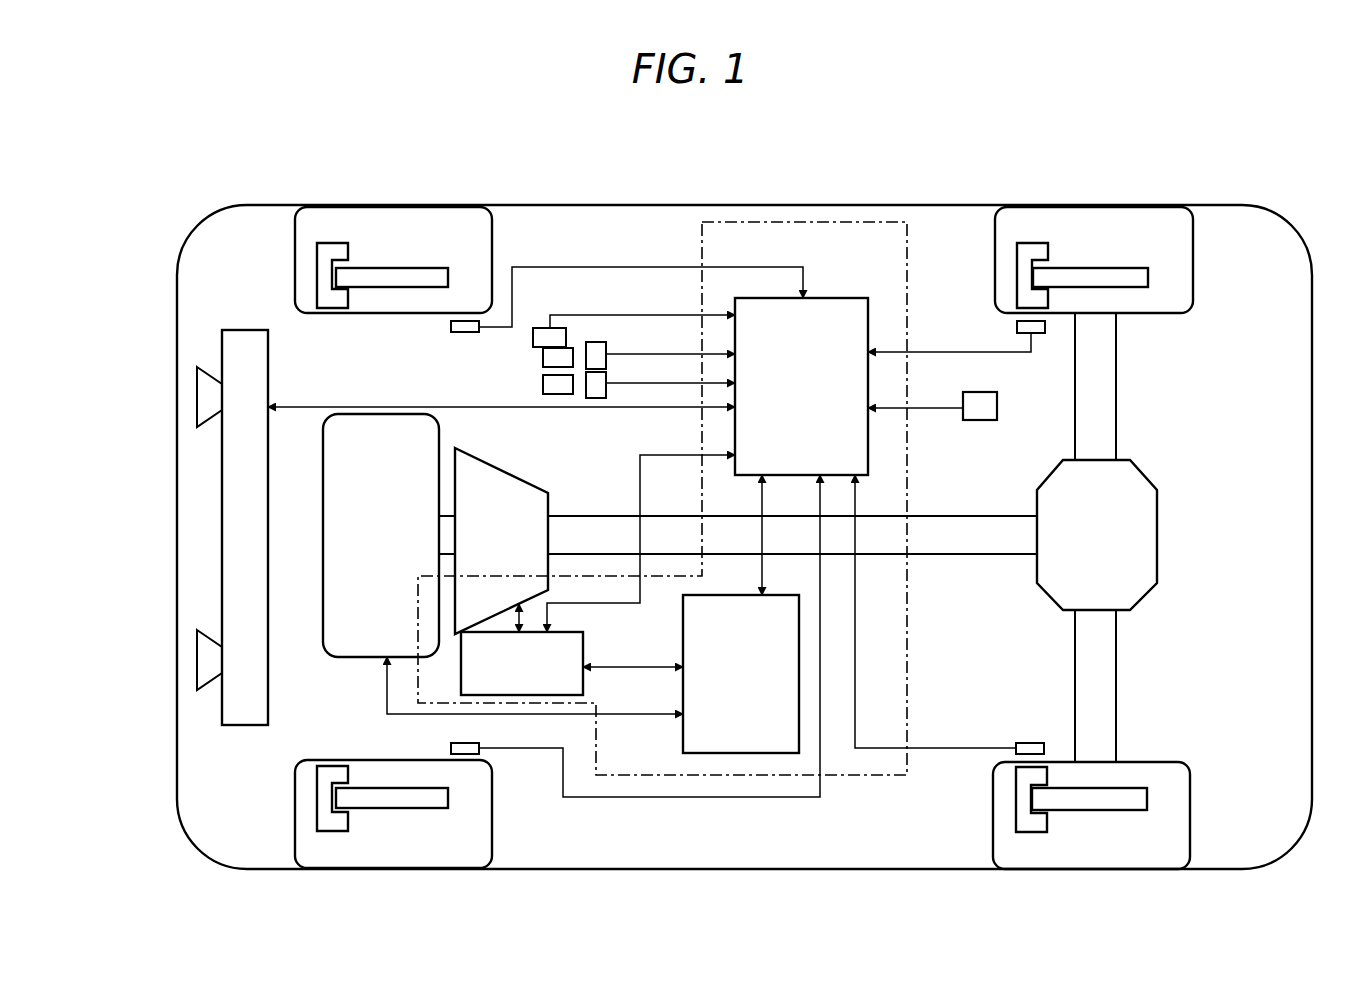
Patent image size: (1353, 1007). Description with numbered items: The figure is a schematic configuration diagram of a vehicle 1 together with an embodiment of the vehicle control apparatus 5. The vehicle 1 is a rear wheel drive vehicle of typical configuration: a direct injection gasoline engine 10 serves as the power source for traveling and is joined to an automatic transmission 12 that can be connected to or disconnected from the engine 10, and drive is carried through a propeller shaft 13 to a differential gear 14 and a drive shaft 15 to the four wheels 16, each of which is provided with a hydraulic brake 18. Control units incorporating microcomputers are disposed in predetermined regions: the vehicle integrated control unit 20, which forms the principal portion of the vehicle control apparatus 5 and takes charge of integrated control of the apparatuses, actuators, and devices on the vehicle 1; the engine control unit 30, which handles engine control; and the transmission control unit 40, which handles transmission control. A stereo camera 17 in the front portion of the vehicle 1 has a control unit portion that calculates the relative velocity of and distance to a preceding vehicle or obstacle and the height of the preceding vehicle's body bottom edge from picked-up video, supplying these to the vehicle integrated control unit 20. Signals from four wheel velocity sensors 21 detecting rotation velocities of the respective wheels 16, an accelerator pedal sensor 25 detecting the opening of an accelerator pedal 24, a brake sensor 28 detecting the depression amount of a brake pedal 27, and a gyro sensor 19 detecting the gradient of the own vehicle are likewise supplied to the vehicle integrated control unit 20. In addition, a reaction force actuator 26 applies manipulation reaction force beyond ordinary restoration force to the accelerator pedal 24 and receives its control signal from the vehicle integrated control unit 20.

The vehicle 1 is at (508, 178).
The vehicle control apparatus 5 is at (760, 220).
The direct injection gasoline engine 10 is at (345, 645).
The automatic transmission 12 is at (510, 478).
The propeller shaft 13 is at (932, 545).
The differential gear 14 is at (1150, 550).
The drive shaft 15 is at (1103, 380).
The wheels 16 is at (383, 235).
The stereo camera 17 is at (222, 341).
The hydraulic brake 18 is at (317, 272).
The gyro sensor 19 is at (985, 420).
The vehicle integrated control unit 20 is at (845, 298).
The wheel velocity sensors 21 is at (462, 332).
The accelerator pedal 24 is at (543, 358).
The accelerator pedal sensor 25 is at (598, 352).
The reaction force actuator 26 is at (550, 328).
The brake pedal 27 is at (543, 386).
The brake sensor 28 is at (606, 381).
The engine control unit 30 is at (680, 735).
The transmission control unit 40 is at (583, 646).